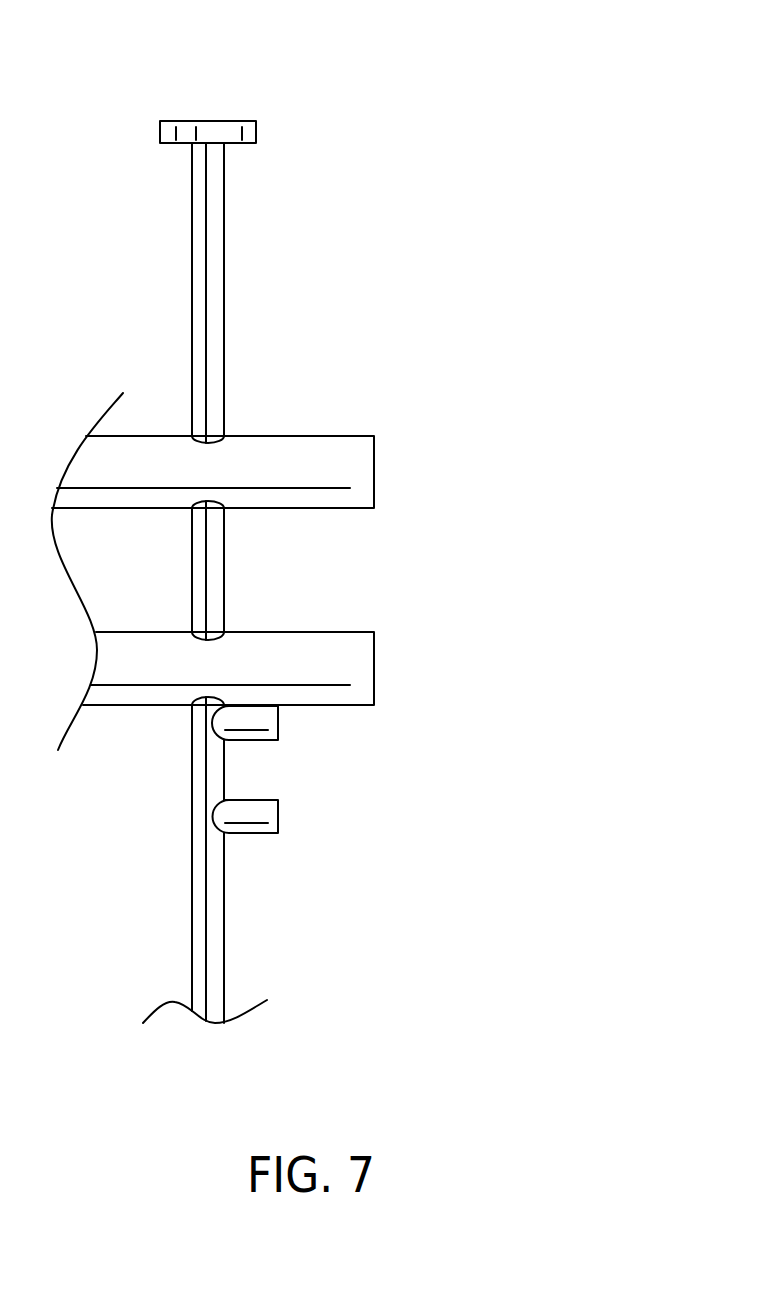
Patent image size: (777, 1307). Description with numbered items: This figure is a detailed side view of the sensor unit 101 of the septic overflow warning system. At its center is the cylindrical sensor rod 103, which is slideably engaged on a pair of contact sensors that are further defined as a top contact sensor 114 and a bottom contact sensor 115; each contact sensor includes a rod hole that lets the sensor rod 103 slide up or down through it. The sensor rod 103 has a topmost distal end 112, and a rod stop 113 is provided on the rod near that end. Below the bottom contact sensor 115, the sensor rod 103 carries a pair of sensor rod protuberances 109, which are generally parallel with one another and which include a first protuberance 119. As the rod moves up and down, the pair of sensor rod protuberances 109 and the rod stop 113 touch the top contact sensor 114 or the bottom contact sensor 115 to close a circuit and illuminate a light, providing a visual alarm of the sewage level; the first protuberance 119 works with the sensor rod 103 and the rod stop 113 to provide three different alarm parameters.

The sensor unit 101 is at (563, 433).
The sensor rod 103 is at (224, 577).
The pair of sensor rod protuberances 109 is at (277, 726).
The topmost distal end 112 is at (207, 143).
The rod stop 113 is at (206, 121).
The top contact sensor 114 is at (374, 473).
The bottom contact sensor 115 is at (374, 668).
The first protuberance 119 is at (268, 717).